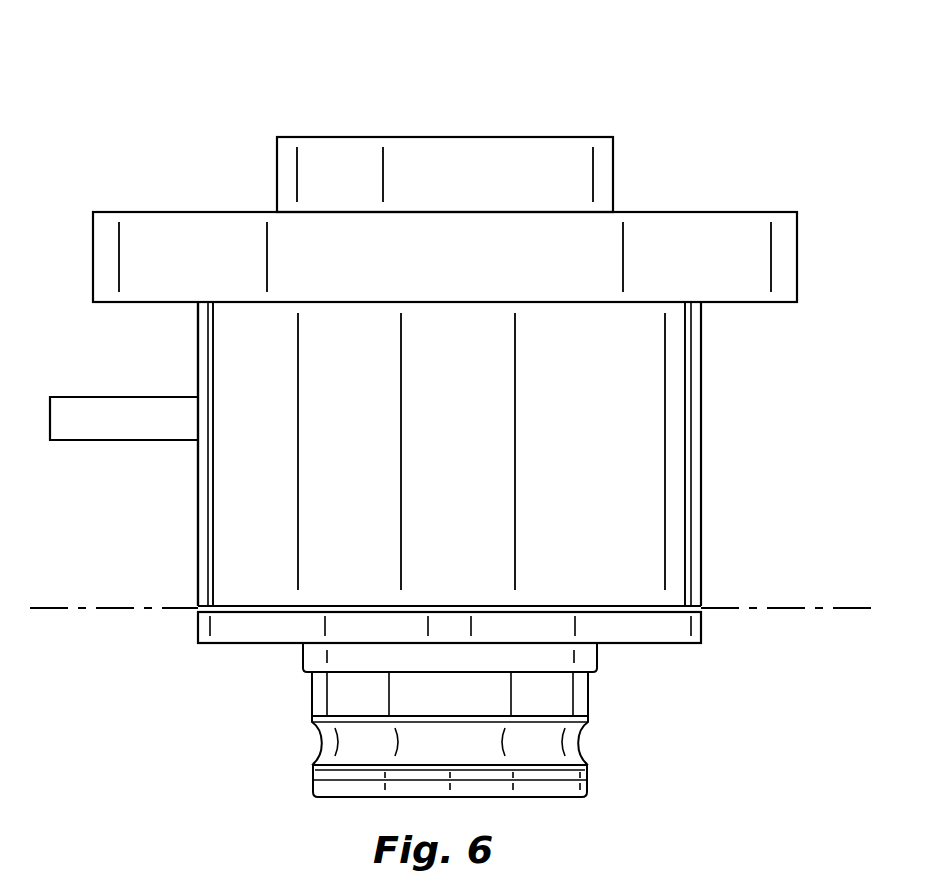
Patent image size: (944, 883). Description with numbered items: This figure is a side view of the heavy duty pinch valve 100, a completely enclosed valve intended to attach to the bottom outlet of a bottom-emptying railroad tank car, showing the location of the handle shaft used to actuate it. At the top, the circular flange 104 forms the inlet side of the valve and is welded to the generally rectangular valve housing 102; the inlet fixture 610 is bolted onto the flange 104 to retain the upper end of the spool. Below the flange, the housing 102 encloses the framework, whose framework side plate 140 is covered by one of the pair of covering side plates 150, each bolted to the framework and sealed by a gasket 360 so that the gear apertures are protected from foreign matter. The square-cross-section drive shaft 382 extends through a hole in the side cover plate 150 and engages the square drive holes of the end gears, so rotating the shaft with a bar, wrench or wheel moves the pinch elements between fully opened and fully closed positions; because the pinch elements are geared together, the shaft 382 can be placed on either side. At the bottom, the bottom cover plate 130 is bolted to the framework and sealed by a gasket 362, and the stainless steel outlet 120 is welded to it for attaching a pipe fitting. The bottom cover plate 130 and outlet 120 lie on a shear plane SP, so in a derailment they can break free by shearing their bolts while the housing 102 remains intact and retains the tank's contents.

The heavy duty pinch valve 100 is at (635, 116).
The valve housing 102 is at (703, 338).
The circular flange 104 is at (733, 214).
The valve outlet 120 is at (593, 694).
The bottom cover plate 130 is at (663, 633).
The framework side plate 140 is at (463, 390).
The covering side plate 150 is at (197, 527).
The gasket 360 is at (218, 476).
The gasket 362 is at (607, 603).
The drive shaft 382 is at (122, 432).
The inlet fixture 610 is at (543, 137).
The shear plane SP is at (45, 608).